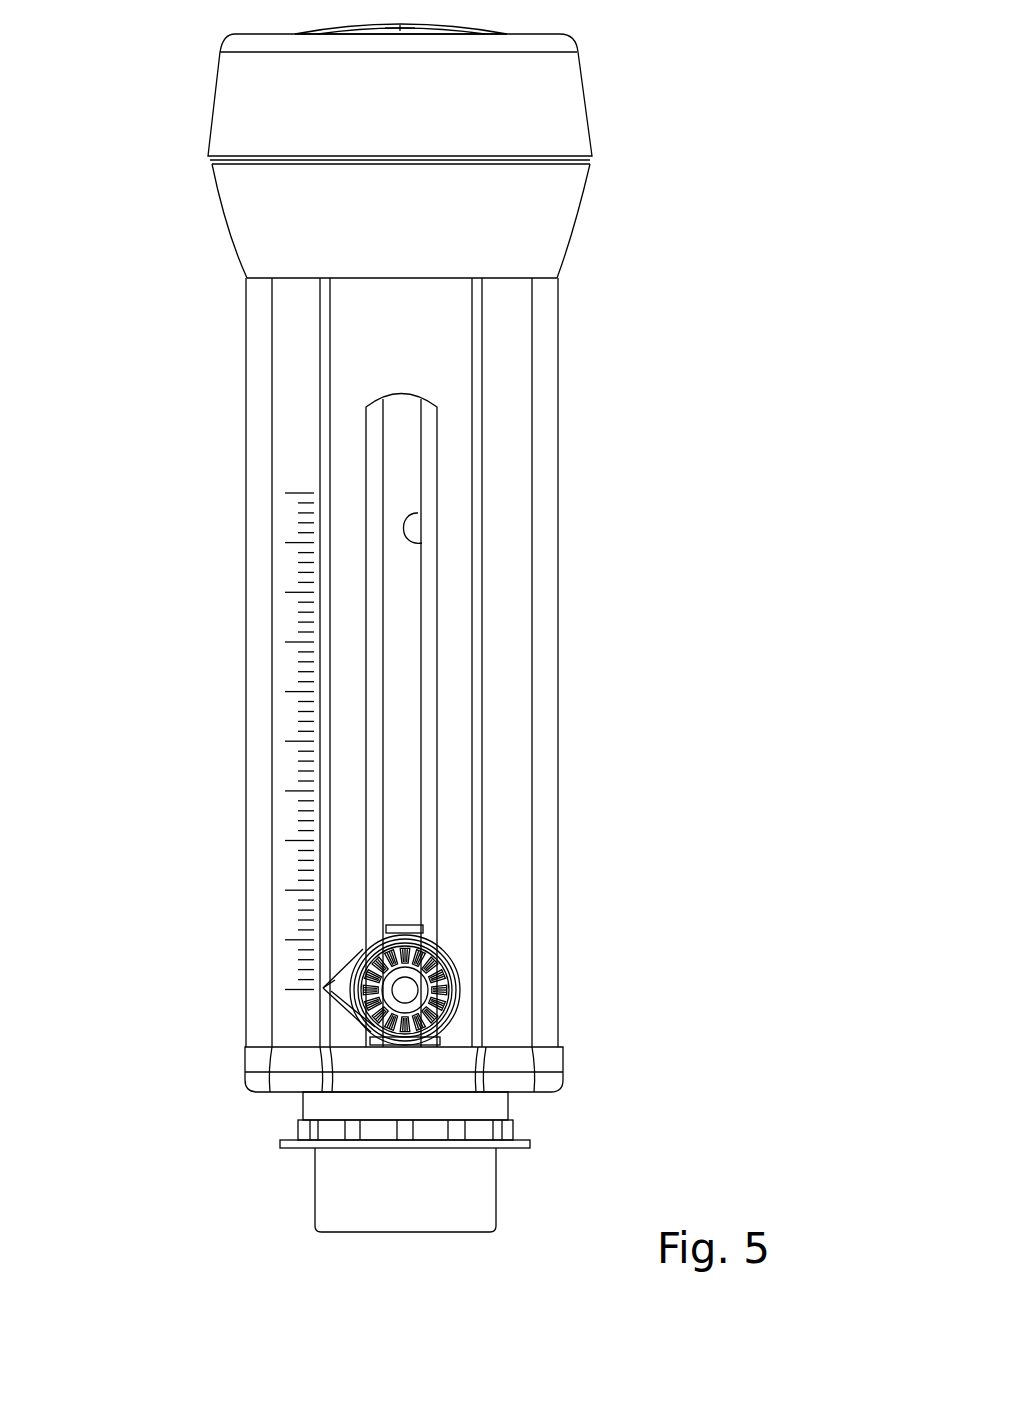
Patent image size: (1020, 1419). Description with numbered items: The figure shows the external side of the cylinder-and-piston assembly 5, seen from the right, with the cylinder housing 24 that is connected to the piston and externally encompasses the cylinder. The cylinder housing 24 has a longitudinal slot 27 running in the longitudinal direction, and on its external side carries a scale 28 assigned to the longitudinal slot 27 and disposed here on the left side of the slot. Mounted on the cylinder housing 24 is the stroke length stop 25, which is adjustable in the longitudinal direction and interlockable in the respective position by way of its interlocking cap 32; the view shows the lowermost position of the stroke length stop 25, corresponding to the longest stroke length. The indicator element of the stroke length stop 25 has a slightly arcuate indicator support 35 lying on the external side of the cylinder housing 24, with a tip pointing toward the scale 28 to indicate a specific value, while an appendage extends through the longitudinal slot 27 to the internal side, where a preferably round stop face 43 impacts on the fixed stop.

The cylinder-and-piston assembly 5 is at (660, 208).
The cylinder housing 24 is at (544, 390).
The longitudinal slot 27 is at (422, 543).
The scale 28 is at (300, 872).
The stop face 43 is at (405, 925).
The interlocking cap 32 is at (449, 952).
The stroke length stop 25 is at (500, 995).
The indicator support 35 is at (347, 970).